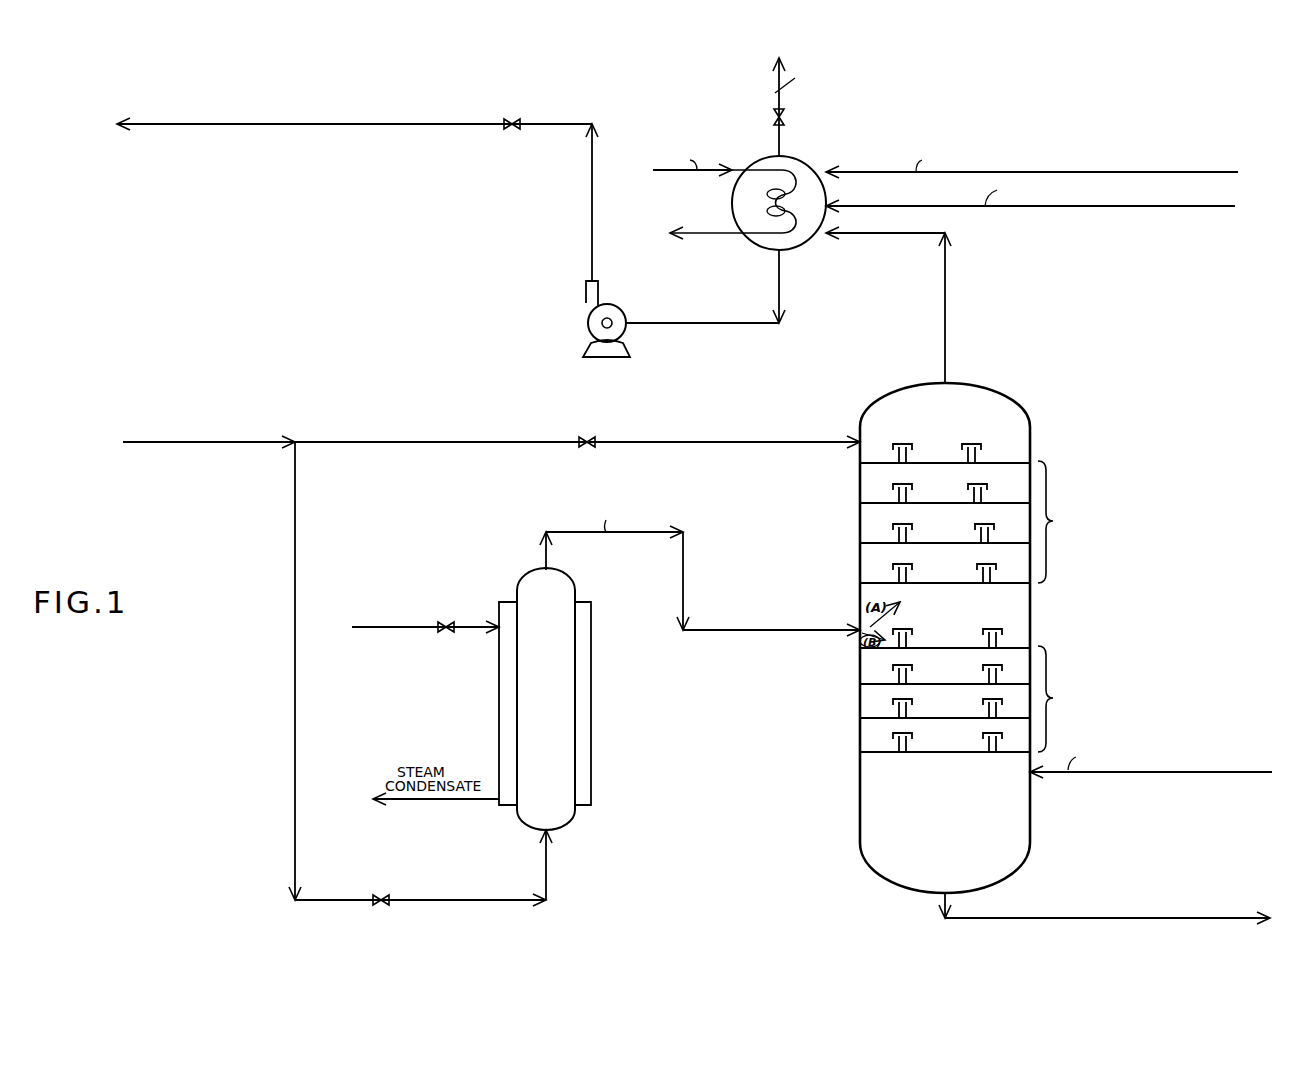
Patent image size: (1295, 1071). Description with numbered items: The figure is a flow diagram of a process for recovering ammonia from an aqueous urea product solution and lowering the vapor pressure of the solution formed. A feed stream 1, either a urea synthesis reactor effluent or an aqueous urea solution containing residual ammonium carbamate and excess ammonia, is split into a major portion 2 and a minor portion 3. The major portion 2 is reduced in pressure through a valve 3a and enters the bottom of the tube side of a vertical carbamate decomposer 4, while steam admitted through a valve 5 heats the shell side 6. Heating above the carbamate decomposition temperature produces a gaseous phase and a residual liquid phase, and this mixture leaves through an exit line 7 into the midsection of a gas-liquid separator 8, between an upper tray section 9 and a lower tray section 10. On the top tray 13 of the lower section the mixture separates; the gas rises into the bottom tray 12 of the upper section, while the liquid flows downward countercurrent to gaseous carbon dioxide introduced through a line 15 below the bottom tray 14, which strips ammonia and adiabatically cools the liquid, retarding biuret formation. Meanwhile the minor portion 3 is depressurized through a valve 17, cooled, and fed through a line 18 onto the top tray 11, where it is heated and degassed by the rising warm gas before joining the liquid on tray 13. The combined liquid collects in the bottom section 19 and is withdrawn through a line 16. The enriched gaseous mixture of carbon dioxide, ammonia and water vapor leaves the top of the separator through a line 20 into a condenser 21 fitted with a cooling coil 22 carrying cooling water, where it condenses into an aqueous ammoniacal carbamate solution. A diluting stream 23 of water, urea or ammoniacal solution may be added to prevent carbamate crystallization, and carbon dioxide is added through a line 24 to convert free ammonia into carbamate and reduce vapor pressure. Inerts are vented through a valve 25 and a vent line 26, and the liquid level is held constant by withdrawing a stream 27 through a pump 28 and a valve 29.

The stream 1 is at (220, 440).
The major portion 2 is at (293, 676).
The minor portion 3 is at (457, 440).
The valve 3a is at (383, 894).
The vertical carbamate decomposer 4 is at (575, 823).
The valve 5 is at (447, 618).
The shell side 6 is at (499, 704).
The exit line 7 is at (683, 594).
The gas-liquid separator 8 is at (1035, 612).
The upper tray section 9 is at (967, 522).
The lower tray section 10 is at (979, 699).
The top tray 11 is at (945, 458).
The bottom tray 12 is at (956, 583).
The top tray 13 is at (966, 648).
The bottom tray 14 is at (962, 752).
The line 15 is at (1172, 772).
The line 16 is at (1208, 916).
The valve 17 is at (589, 436).
The line 18 is at (722, 440).
The bottom section 19 is at (860, 834).
The line 20 is at (947, 340).
The condenser 21 is at (798, 164).
The cooling coil 22 is at (773, 238).
The stream 23 is at (1200, 171).
The line 24 is at (1200, 208).
The valve 25 is at (770, 118).
The vent line 26 is at (776, 84).
The stream 27 is at (337, 126).
The pump 28 is at (585, 334).
The valve 29 is at (508, 132).